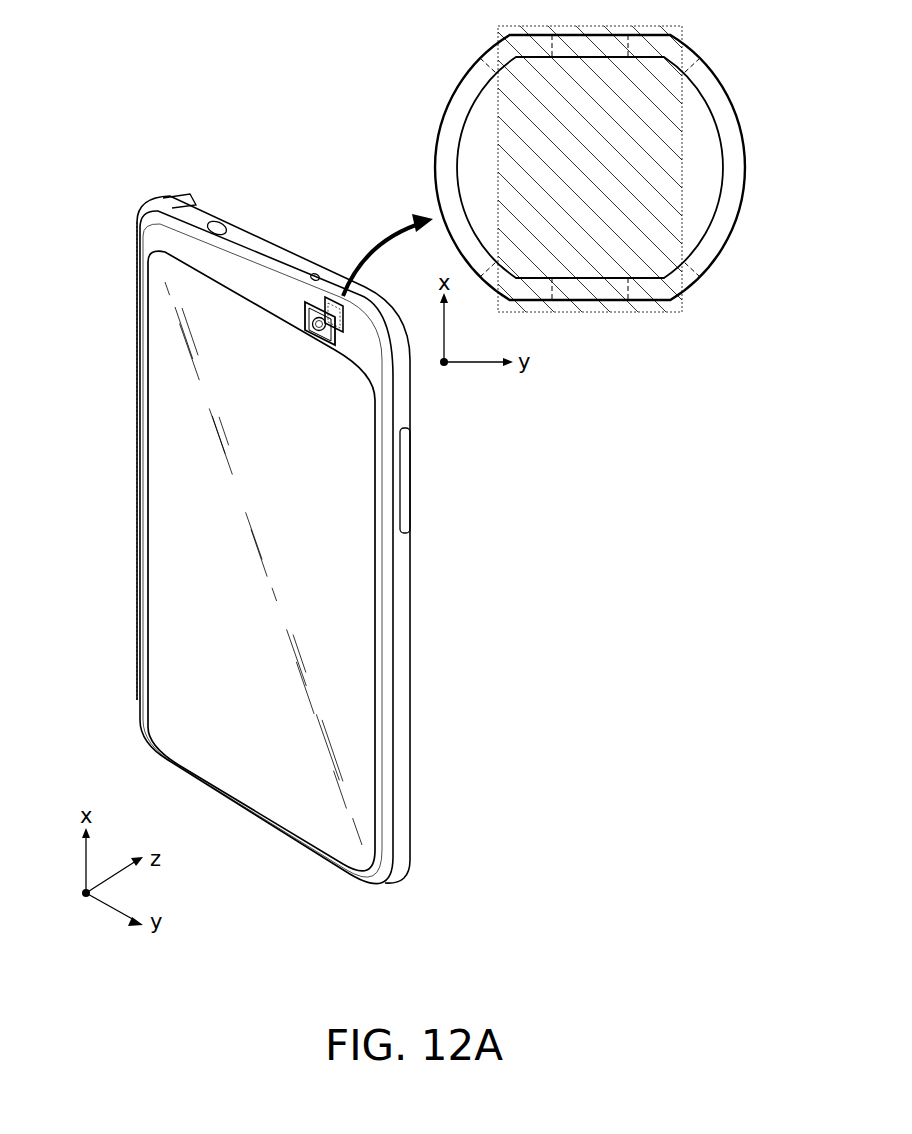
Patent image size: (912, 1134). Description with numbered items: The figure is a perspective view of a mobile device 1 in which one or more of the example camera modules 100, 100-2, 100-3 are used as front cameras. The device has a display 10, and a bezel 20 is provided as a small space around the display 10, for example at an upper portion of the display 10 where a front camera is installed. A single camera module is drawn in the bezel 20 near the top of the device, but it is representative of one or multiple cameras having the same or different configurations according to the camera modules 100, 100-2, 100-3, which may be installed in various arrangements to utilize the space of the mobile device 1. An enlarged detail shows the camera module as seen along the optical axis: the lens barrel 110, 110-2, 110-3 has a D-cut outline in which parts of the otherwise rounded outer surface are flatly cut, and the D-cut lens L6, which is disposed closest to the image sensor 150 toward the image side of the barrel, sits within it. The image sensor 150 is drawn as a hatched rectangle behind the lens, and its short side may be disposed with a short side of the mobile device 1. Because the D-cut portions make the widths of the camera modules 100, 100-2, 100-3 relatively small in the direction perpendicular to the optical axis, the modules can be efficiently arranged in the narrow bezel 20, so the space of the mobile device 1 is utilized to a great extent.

The mobile device 1 is at (283, 473).
The display 10 is at (186, 605).
The bezel 20 is at (153, 243).
The camera module 100 is at (315, 203).
The camera module 100-2 is at (315, 203).
The camera module 100-3 is at (315, 203).
The lens barrel 110 is at (315, 197).
The lens barrel 110-2 is at (315, 197).
The lens barrel 110-3 is at (450, 118).
The image sensor 150 is at (497, 108).
The D-cut lens L6 is at (700, 217).